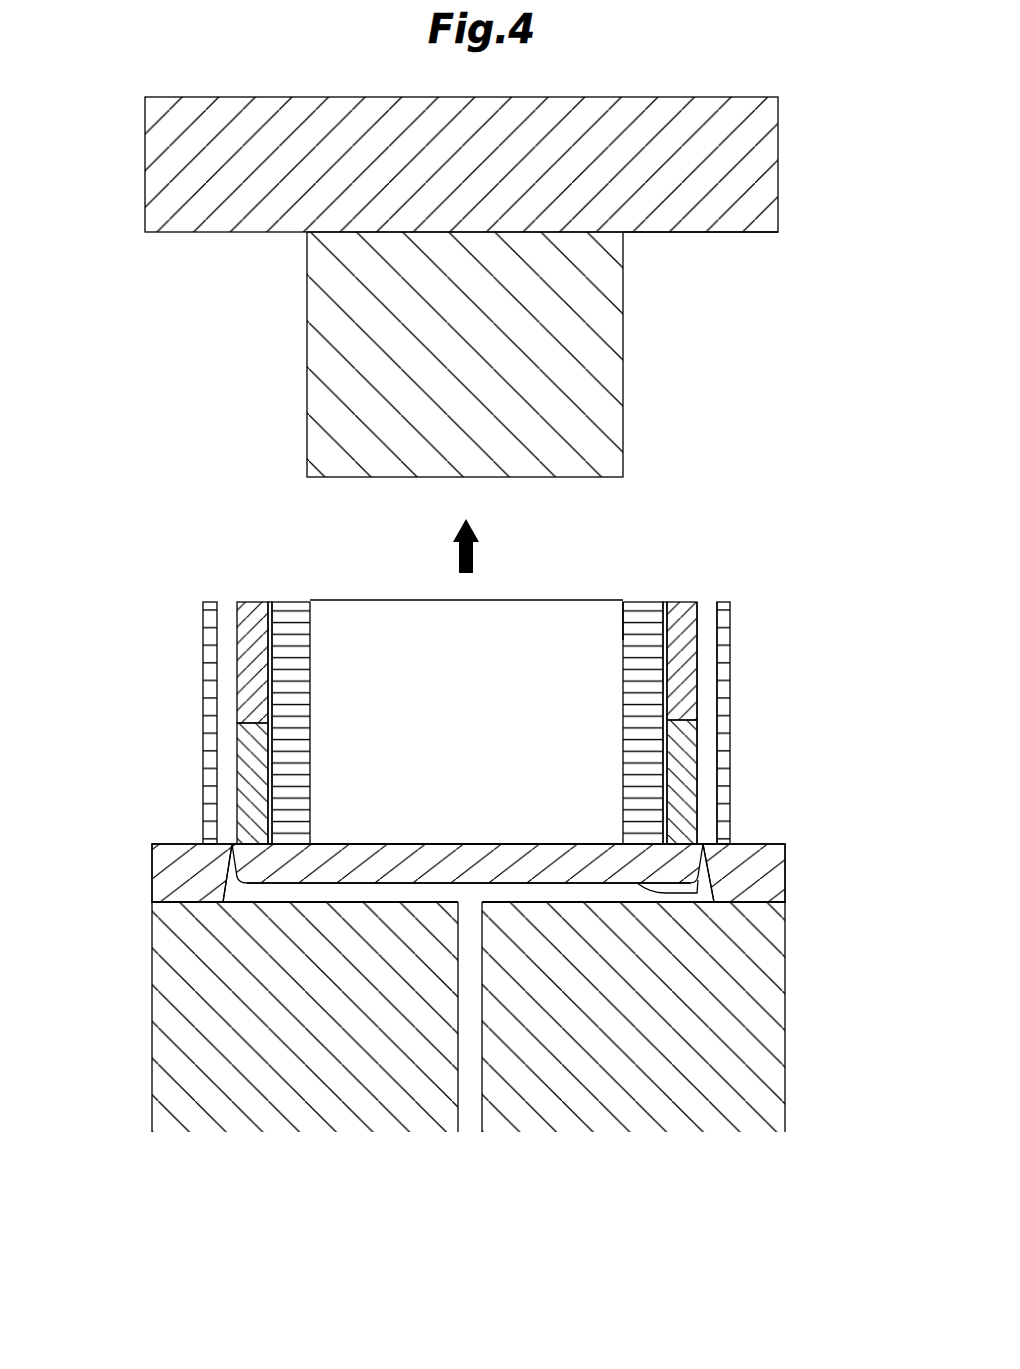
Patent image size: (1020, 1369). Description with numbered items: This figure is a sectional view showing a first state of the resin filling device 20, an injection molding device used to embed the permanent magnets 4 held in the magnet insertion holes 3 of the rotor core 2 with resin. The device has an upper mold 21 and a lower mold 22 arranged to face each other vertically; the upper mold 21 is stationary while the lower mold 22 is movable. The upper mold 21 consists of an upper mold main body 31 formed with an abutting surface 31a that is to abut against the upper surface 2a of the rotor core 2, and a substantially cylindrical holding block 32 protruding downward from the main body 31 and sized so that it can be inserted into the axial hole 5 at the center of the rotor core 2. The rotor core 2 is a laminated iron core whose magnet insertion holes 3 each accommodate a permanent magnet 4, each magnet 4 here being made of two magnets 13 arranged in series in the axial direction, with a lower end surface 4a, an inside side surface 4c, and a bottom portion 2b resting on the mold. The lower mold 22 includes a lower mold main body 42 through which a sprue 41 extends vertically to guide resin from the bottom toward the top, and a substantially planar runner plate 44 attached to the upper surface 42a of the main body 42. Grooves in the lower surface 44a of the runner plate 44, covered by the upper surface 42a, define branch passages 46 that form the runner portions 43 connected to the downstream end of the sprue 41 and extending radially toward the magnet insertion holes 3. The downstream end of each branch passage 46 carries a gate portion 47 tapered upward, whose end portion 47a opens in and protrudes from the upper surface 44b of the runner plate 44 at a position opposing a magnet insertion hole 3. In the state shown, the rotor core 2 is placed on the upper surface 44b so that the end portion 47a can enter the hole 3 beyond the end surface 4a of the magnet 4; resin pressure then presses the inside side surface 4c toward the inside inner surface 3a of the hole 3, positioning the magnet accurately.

The resin filling device 20 is at (146, 378).
The upper mold 21 is at (724, 269).
The upper mold main body 31 is at (784, 169).
The abutting surface 31a is at (657, 233).
The holding block 32 is at (624, 437).
The rotor core 2 is at (733, 618).
The upper surface of the rotor core 2a is at (641, 606).
The bottom portion of container 2b is at (312, 862).
The magnet insertion hole 3 is at (702, 618).
The inside inner surface of the magnet insertion hole 3a is at (258, 650).
The permanent magnet 4 is at (675, 603).
The end surface of the permanent magnet 4a is at (686, 847).
The inside side surface of the permanent magnet 4c is at (286, 630).
The axial hole 5 is at (622, 612).
The magnet 13 is at (710, 753).
The lower mold 22 is at (812, 824).
The sprue 41 is at (459, 1083).
The lower mold main body 42 is at (790, 1049).
The upper surface of the lower mold main body 42a is at (168, 902).
The runner portion 43 is at (556, 888).
The runner plate 44 is at (788, 866).
The lower surface of the runner plate 44a is at (190, 903).
The upper surface of the runner plate 44b is at (455, 843).
The branch passage 46 is at (698, 882).
The gate portion 47 is at (713, 868).
The end portion of the gate portion 47a is at (723, 843).